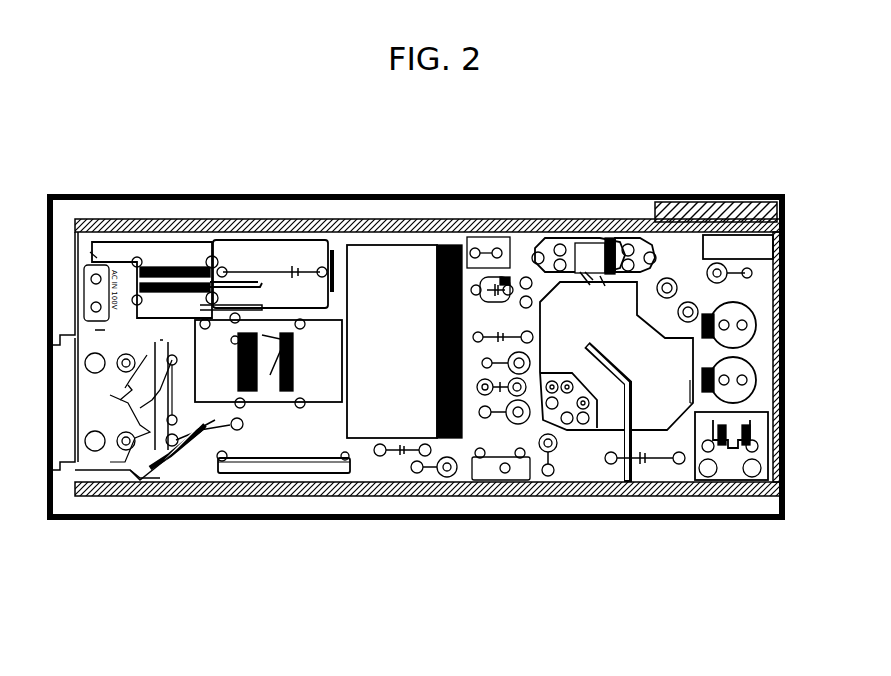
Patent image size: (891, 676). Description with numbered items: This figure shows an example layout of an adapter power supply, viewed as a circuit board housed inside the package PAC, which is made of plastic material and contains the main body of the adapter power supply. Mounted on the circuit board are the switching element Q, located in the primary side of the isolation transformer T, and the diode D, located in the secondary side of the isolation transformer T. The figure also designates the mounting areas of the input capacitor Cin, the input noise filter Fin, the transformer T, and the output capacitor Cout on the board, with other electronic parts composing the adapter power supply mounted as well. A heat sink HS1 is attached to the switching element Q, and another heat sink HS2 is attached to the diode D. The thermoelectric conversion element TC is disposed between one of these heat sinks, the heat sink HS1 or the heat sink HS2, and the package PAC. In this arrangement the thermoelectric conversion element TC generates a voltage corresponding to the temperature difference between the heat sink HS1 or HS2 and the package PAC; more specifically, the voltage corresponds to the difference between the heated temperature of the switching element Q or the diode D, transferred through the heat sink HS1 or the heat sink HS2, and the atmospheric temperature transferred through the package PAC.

The package PAC is at (548, 194).
The heat sink HS2 is at (395, 230).
The heat sink HS1 is at (386, 497).
The input noise filter Fin is at (170, 240).
The input capacitor Cin is at (372, 280).
The switching element Q is at (291, 482).
The isolation transformer T is at (610, 397).
The thermoelectric conversion element TC is at (711, 202).
The diode D is at (745, 247).
The output capacitor Cout is at (748, 312).